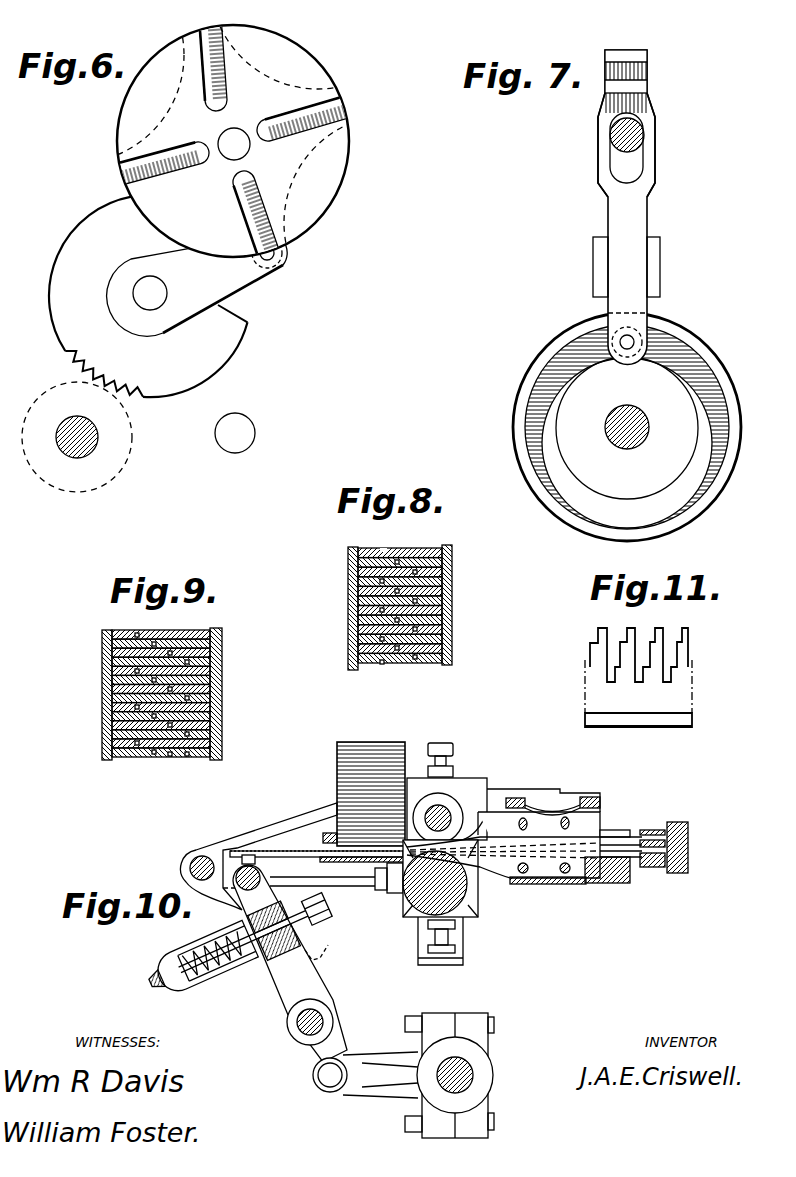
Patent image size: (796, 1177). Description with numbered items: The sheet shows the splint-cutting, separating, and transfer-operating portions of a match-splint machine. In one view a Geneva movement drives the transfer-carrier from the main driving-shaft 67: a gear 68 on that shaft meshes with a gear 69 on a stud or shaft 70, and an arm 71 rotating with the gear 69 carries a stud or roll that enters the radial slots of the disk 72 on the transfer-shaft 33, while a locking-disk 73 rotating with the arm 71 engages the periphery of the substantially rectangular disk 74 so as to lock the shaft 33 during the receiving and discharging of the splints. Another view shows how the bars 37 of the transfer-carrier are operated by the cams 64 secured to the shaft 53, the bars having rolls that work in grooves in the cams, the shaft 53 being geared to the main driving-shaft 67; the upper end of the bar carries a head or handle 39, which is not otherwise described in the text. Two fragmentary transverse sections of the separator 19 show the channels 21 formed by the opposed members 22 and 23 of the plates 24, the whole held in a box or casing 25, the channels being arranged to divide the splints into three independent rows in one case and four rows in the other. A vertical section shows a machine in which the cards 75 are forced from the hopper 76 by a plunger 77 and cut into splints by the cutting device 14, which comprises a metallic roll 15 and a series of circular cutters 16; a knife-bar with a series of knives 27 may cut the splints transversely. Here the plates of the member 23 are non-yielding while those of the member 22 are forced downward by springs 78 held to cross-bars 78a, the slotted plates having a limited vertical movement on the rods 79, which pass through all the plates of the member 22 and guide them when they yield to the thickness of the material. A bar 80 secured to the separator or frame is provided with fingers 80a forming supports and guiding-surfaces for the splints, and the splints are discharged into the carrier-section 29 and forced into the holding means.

In FIG. 10, the cutting device 14 is at (423, 882).
In FIG. 10, the metallic roll 15 is at (465, 918).
In FIG. 10, the circular cutters 16 is at (457, 800).
In FIG. 8, the separator 19 is at (400, 592).
In FIG. 9, the separator 19 is at (151, 722).
In FIG. 8, the channels 21 is at (415, 658).
In FIG. 10, the channels 21 is at (515, 852).
In FIG. 8, the opposed member 22 is at (424, 599).
In FIG. 9, the opposed member 22 is at (188, 697).
In FIG. 10, the opposed member 22 is at (539, 821).
In FIG. 8, the opposed member 23 is at (369, 609).
In FIG. 9, the opposed member 23 is at (133, 712).
In FIG. 10, the opposed member 23 is at (548, 903).
In FIG. 8, the plates 24 is at (358, 573).
In FIG. 9, the plates 24 is at (222, 665).
In FIG. 8, the box or casing 25 is at (452, 567).
In FIG. 9, the box or casing 25 is at (102, 760).
In FIG. 9, the knives 27 is at (185, 760).
In FIG. 10, the carrier-section 29 is at (680, 875).
In FIG. 6, the transfer-shaft 33 is at (244, 150).
In FIG. 7, the transfer-shaft 33 is at (612, 145).
In FIG. 7, the transfer-carrier bars 37 is at (633, 213).
In FIG. 7, the handle 39 is at (650, 73).
In FIG. 6, the shaft 53 is at (252, 440).
In FIG. 7, the shaft 53 is at (630, 447).
In FIG. 7, the cams 64 is at (705, 510).
In FIG. 6, the main driving-shaft 67 is at (82, 455).
In FIG. 6, the gear 68 is at (72, 377).
In FIG. 6, the gear 69 is at (135, 398).
In FIG. 6, the stud or shaft 70 is at (148, 296).
In FIG. 6, the arm 71 is at (233, 283).
In FIG. 6, the disk 72 is at (122, 138).
In FIG. 6, the locking-disk 73 is at (222, 357).
In FIG. 6, the substantially rectangular disk 74 is at (290, 168).
In FIG. 10, the cards 75 is at (377, 735).
In FIG. 10, the hopper 76 is at (407, 757).
In FIG. 10, the plunger 77 is at (282, 850).
In FIG. 10, the springs 78 is at (547, 808).
In FIG. 10, the cross-bars 78a is at (600, 797).
In FIG. 10, the rods 79 is at (572, 823).
In FIG. 11, the bar 80 is at (692, 675).
In FIG. 10, the bar 80 is at (620, 884).
In FIG. 11, the fingers 80a is at (682, 640).
In FIG. 10, the fingers 80a is at (634, 884).